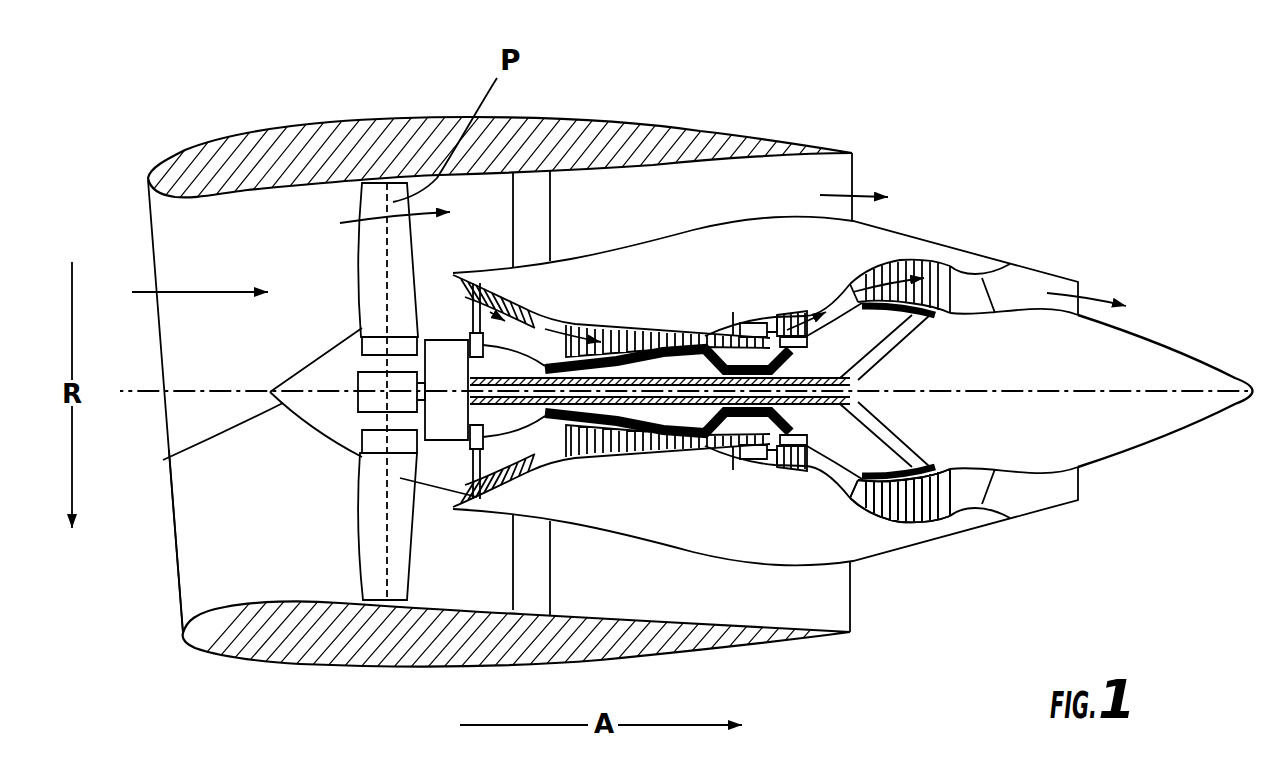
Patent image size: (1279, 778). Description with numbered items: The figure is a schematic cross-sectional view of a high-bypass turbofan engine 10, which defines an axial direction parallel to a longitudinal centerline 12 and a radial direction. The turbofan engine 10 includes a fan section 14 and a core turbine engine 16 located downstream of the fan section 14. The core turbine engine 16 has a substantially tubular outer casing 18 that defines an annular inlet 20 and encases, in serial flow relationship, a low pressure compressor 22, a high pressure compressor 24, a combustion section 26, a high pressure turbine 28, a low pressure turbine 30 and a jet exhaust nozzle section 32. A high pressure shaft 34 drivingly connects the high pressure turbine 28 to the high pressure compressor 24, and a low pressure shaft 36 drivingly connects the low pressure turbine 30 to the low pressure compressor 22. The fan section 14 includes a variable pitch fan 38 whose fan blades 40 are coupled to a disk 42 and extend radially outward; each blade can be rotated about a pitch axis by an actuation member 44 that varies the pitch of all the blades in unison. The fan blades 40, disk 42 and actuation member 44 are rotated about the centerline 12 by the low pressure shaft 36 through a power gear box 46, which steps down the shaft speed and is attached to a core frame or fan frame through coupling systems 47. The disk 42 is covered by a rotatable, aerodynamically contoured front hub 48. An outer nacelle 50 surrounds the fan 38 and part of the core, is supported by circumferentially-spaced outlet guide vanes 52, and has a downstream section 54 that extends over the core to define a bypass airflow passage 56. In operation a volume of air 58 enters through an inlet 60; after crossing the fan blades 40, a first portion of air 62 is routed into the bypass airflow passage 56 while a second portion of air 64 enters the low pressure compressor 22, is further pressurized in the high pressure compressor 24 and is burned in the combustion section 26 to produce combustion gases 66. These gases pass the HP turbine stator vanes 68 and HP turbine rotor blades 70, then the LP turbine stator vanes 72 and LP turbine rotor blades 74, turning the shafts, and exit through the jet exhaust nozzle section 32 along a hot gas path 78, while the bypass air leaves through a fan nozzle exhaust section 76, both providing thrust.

The turbofan engine 10 is at (1000, 128).
The longitudinal centerline 12 is at (1020, 390).
The fan section 14 is at (320, 210).
The core turbine engine 16 is at (673, 275).
The outer casing 18 is at (708, 560).
The annular inlet 20 is at (458, 496).
The low pressure compressor 22 is at (514, 470).
The high pressure compressor 24 is at (580, 447).
The combustion section 26 is at (753, 462).
The high pressure turbine 28 is at (819, 466).
The low pressure turbine 30 is at (936, 520).
The jet exhaust nozzle section 32 is at (1000, 504).
The high pressure shaft 34 is at (762, 350).
The low pressure shaft 36 is at (880, 355).
The variable pitch fan 38 is at (326, 444).
The fan blades 40 is at (355, 540).
The disk 42 is at (360, 345).
The actuation member 44 is at (356, 375).
The power gear box 46 is at (540, 325).
The coupling systems 47 is at (462, 329).
The front hub 48 is at (168, 460).
The outer nacelle 50 is at (405, 667).
The outlet guide vanes 52 is at (553, 203).
The downstream section 54 is at (800, 150).
The bypass airflow passage 56 is at (727, 209).
The volume of air 58 is at (200, 290).
The inlet 60 is at (177, 603).
The first portion of air 62 is at (377, 225).
The second portion of air 64 is at (433, 293).
The combustion gases 66 is at (824, 311).
The HP turbine stator vanes 68 is at (764, 460).
The HP turbine rotor blades 70 is at (788, 452).
The LP turbine stator vanes 72 is at (860, 510).
The LP turbine rotor blades 74 is at (870, 513).
The fan nozzle exhaust section 76 is at (843, 180).
The hot gas path 78 is at (840, 296).